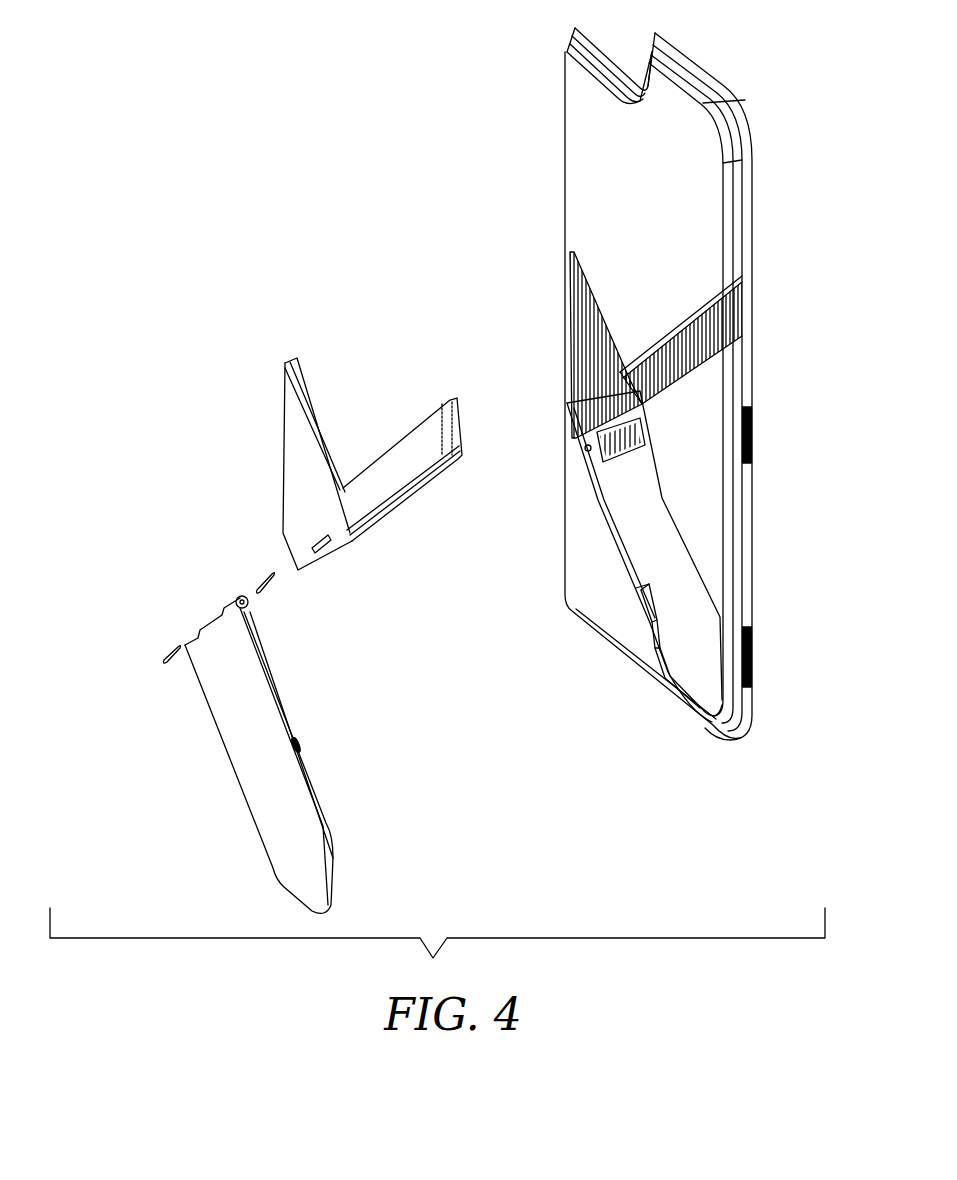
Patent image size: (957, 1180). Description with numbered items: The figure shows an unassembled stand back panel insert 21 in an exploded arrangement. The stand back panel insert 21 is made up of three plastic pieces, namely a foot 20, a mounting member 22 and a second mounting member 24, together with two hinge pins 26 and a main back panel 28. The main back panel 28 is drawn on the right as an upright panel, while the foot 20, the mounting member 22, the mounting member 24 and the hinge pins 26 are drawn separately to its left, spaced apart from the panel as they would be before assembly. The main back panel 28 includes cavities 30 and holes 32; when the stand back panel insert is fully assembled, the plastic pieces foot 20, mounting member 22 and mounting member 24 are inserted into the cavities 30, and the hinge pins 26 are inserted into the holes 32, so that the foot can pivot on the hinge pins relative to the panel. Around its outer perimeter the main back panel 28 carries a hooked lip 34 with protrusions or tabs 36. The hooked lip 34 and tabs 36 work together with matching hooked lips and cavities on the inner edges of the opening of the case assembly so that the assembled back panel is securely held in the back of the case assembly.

The foot 20 is at (313, 793).
The stand back panel insert 21 is at (161, 301).
The mounting member 22 is at (315, 400).
The mounting member 24 is at (395, 516).
The hinge pins 26 is at (258, 578).
The main back panel 28 is at (582, 163).
The cavities 30 is at (740, 310).
The holes 32 is at (638, 413).
The hooked lip 34 is at (737, 93).
The protrusions or tabs 36 is at (703, 67).